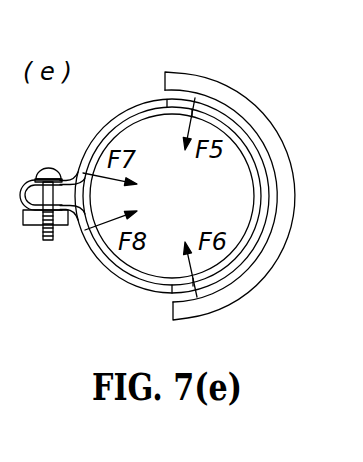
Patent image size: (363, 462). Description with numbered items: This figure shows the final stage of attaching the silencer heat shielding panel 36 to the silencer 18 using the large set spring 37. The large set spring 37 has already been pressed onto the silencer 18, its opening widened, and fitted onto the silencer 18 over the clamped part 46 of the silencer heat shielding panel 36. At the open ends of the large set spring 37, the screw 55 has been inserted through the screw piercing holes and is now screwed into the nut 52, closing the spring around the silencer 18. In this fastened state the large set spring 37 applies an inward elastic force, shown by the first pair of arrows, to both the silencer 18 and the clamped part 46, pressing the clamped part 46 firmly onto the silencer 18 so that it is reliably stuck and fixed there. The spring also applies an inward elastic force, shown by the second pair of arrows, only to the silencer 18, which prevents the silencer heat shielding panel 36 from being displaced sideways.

The silencer 18 is at (125, 280).
The large set spring 37 is at (140, 88).
The clamped part 46 is at (262, 145).
The silencer heat shielding panel 36 is at (248, 97).
The screw 55 is at (47, 166).
The nut 52 is at (30, 228).